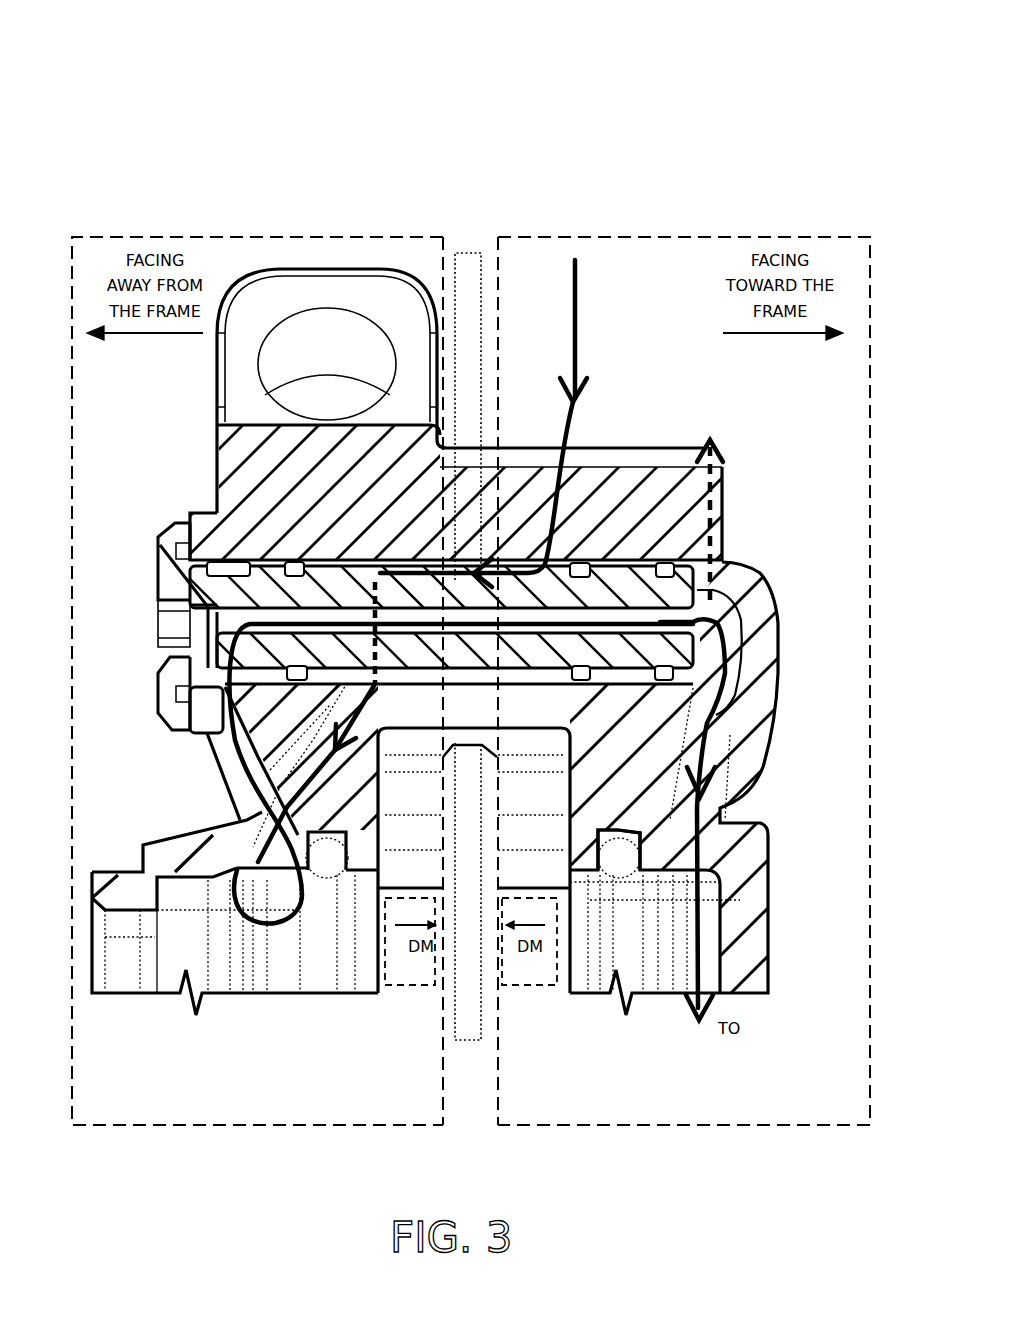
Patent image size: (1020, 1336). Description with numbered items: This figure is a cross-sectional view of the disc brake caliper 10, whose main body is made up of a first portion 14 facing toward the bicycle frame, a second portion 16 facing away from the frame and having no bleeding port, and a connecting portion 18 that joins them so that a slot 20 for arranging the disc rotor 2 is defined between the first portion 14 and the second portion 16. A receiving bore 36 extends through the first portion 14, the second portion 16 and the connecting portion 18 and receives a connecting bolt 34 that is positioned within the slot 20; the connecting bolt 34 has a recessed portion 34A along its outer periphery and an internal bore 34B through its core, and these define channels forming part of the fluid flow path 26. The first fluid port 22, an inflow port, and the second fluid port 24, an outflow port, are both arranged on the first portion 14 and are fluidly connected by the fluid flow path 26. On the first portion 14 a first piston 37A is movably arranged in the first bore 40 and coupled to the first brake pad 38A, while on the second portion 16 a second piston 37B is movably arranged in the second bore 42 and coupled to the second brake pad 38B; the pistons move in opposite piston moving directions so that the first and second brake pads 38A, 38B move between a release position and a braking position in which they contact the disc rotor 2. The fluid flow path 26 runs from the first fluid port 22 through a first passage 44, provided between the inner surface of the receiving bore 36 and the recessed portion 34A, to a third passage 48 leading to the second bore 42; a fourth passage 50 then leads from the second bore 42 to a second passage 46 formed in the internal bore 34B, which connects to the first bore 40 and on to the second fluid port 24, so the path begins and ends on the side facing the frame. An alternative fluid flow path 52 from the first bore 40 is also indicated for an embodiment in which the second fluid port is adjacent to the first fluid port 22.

The disc brake caliper 10 is at (452, 42).
The first portion 14 is at (560, 237).
The second portion 16 is at (170, 237).
The connecting portion 18 is at (487, 237).
The disc rotor 2 is at (453, 988).
The slot 20 is at (470, 868).
The first fluid port 22 is at (575, 447).
The second fluid port 24 is at (701, 842).
The fluid flow path 26 is at (580, 322).
The connecting bolt 34 is at (158, 578).
The recessed portion 34A is at (533, 677).
The internal bore 34B is at (267, 617).
The receiving bore 36 is at (233, 660).
The first piston 37A is at (587, 923).
The second piston 37B is at (357, 923).
The first brake pad 38A is at (570, 978).
The second brake pad 38B is at (372, 982).
The first bore 40 is at (641, 925).
The second bore 42 is at (301, 917).
The first passage 44 is at (457, 557).
The second passage 46 is at (487, 610).
The third passage 48 is at (260, 760).
The fourth passage 50 is at (252, 782).
The fluid flow path 52 is at (725, 437).